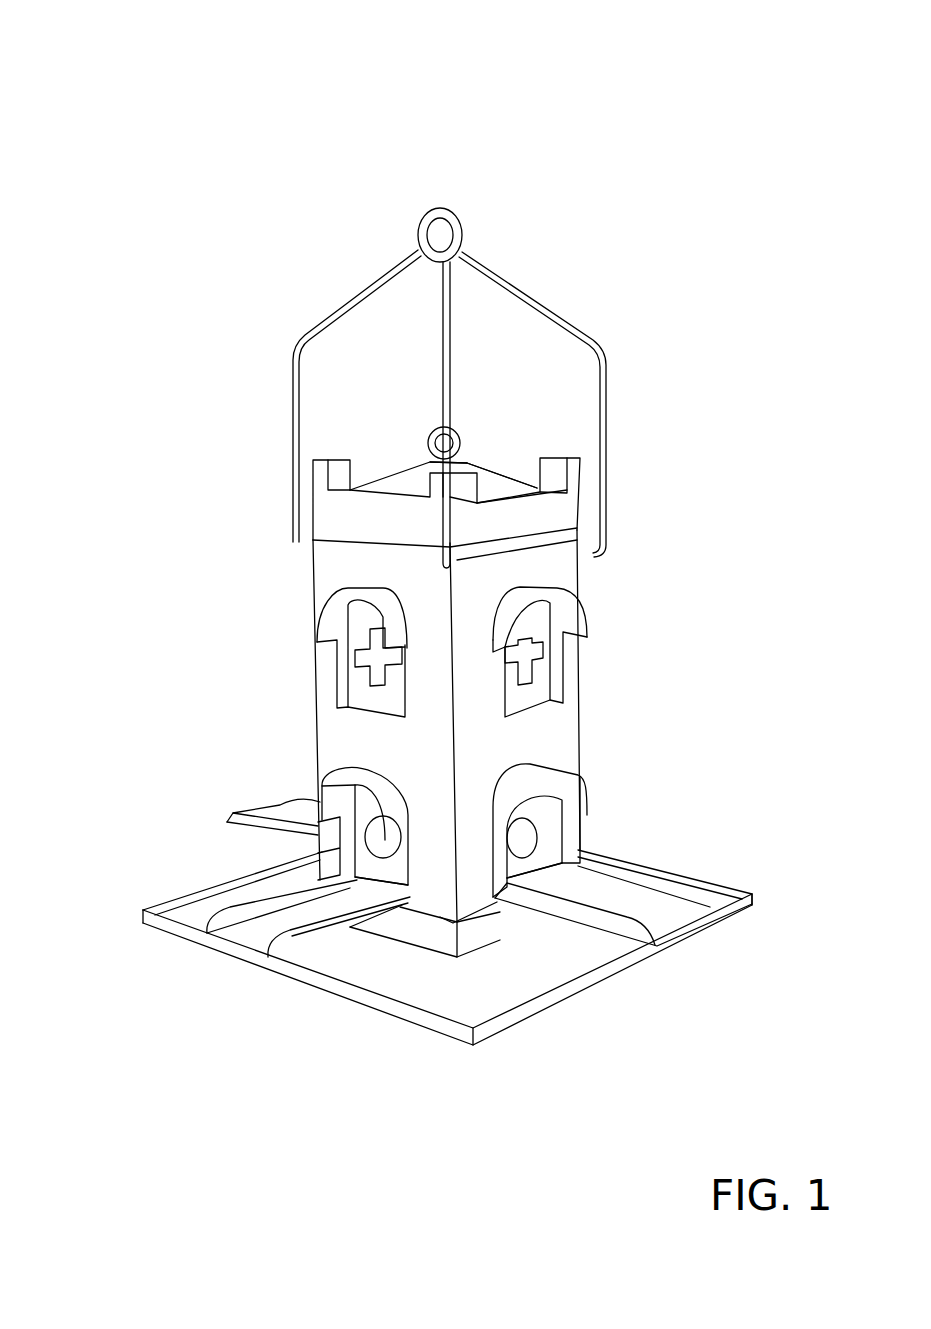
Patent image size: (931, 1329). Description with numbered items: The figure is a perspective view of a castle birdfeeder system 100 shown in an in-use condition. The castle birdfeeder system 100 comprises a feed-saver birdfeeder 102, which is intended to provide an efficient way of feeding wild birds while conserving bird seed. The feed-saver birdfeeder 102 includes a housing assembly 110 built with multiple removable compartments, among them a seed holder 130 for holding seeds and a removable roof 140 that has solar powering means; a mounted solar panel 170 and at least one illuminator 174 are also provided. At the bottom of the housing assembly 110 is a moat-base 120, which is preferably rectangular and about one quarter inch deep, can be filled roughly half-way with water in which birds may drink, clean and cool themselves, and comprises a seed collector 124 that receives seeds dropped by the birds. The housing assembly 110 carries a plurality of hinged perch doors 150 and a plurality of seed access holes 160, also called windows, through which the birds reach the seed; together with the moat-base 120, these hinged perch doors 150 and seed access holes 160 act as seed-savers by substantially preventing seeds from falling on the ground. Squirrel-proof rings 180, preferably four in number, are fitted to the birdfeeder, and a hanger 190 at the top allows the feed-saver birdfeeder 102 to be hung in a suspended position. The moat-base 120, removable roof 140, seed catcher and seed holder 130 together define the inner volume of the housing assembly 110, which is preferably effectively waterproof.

The castle birdfeeder system 100 is at (666, 130).
The feed-saver birdfeeder 102 is at (712, 202).
The housing assembly 110 is at (310, 567).
The moat-base 120 is at (708, 881).
The seed collector 124 is at (631, 1002).
The seed holder 130 is at (394, 466).
The removable roof 140 is at (478, 463).
The hinged perch door 150 is at (203, 904).
The seed access hole 160 is at (367, 834).
The solar panel 170 is at (512, 483).
The illuminator 174 is at (546, 563).
The squirrel-proof ring 180 is at (531, 809).
The hanger 190 is at (437, 206).